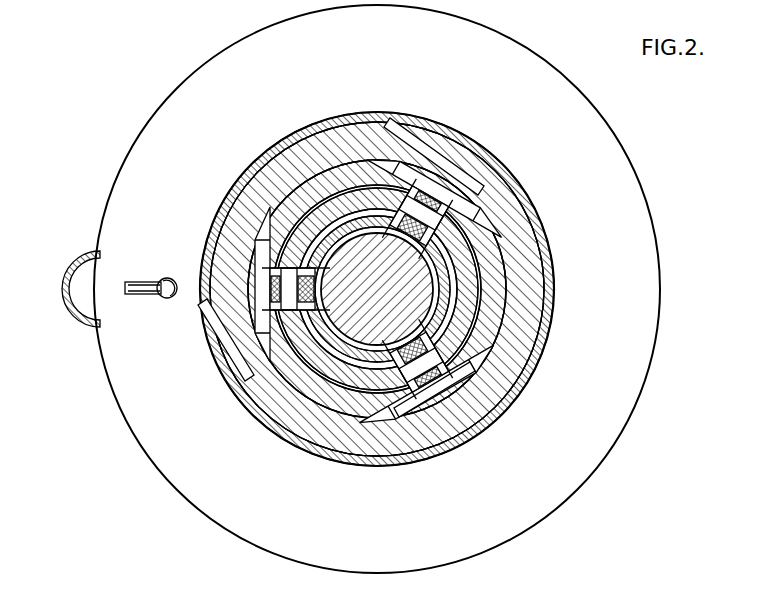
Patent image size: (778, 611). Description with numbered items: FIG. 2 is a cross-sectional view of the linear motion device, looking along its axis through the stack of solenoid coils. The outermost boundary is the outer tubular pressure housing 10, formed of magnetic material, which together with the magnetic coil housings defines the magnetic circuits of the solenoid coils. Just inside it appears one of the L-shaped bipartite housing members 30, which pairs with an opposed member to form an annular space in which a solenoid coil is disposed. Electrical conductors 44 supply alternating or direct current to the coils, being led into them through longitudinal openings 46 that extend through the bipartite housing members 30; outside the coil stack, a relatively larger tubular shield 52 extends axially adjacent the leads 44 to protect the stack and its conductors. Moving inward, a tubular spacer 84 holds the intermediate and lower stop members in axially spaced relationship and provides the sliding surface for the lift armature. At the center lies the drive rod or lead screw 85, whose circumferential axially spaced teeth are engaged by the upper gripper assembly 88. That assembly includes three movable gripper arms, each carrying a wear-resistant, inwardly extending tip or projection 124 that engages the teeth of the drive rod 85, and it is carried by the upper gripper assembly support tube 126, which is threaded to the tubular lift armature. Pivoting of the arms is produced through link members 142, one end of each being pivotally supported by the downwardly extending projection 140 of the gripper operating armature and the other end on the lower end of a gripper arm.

The outer tubular pressure housing 10 is at (448, 135).
The L-shaped bipartite housing member 30 is at (612, 160).
The electrical conductors 44 is at (146, 282).
The longitudinal openings 46 is at (165, 298).
The tubular shield 52 is at (76, 262).
The tubular spacer 84 is at (296, 150).
The drive rod or lead screw 85 is at (425, 287).
The upper gripper assembly 88 is at (272, 212).
The gripper arm tip or projection 124 is at (280, 368).
The upper gripper assembly support tube 126 is at (350, 160).
The downwardly extending projection 140 is at (305, 190).
The link members 142 is at (255, 272).